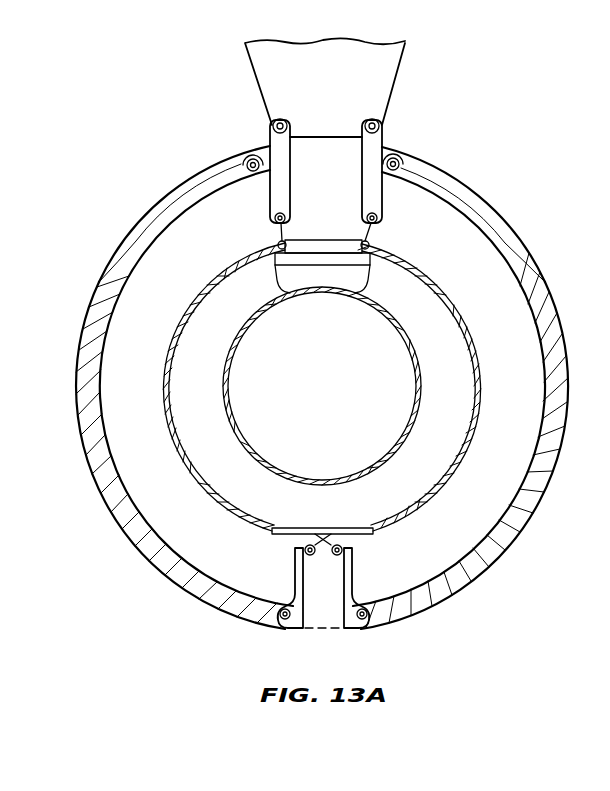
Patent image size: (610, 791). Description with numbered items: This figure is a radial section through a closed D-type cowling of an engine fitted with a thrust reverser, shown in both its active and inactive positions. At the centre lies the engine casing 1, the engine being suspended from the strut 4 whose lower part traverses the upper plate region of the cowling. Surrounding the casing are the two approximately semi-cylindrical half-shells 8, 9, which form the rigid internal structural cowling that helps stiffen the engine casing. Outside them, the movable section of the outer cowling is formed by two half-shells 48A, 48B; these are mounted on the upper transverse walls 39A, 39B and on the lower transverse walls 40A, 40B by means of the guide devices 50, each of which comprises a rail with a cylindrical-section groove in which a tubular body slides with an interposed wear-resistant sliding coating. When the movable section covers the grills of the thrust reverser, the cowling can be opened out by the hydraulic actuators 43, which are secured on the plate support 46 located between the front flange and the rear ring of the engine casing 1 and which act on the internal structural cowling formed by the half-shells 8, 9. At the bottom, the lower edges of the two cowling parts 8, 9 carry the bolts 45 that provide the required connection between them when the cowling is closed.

The engine casing 1 is at (422, 380).
The strut 4 is at (332, 95).
The half-shell 8 is at (166, 376).
The half-shell 9 is at (476, 342).
The upper transverse wall 39A is at (275, 198).
The upper transverse wall 39B is at (370, 212).
The lower transverse wall 40A is at (295, 566).
The lower transverse wall 40B is at (348, 568).
The hydraulic actuator 43 is at (318, 240).
The bolt 45 is at (343, 528).
The plate support 46 is at (333, 263).
The half-shell of movable section 48A is at (181, 190).
The half-shell of movable section 48B is at (490, 202).
The guide device 50 is at (250, 158).